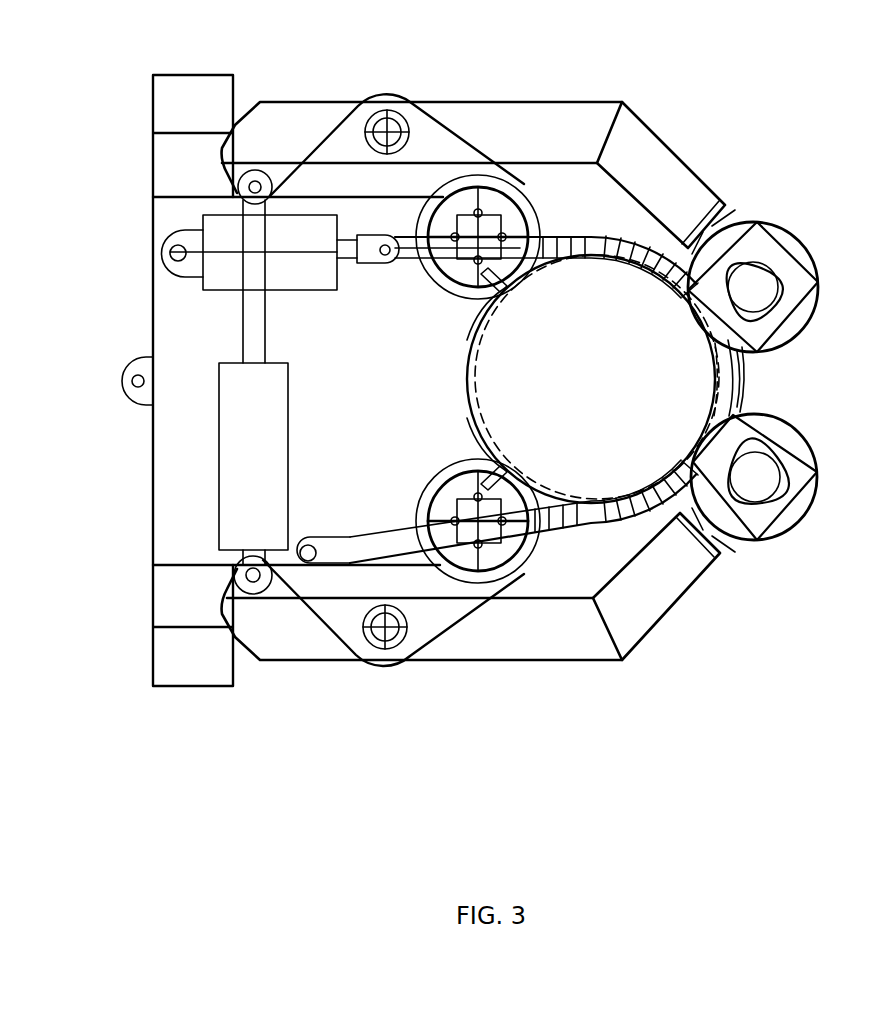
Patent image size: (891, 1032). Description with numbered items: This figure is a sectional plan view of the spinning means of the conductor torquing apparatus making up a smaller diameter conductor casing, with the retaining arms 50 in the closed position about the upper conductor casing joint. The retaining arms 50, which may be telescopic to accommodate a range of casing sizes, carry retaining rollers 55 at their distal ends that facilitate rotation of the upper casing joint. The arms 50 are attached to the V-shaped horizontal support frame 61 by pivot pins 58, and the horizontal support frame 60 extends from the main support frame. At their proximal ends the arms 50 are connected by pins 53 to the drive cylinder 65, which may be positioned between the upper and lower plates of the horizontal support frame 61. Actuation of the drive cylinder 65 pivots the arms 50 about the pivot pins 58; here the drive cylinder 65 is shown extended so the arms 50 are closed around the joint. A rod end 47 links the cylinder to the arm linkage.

The rod end clevis 47 is at (386, 256).
The retaining arms 50 is at (560, 106).
The pins 53 is at (255, 187).
The retaining rollers 55 is at (790, 255).
The pivot pins 58 is at (387, 132).
The horizontal support frame 60 is at (212, 224).
The horizontal support frame 61 is at (432, 130).
The drive cylinder 65 is at (230, 460).